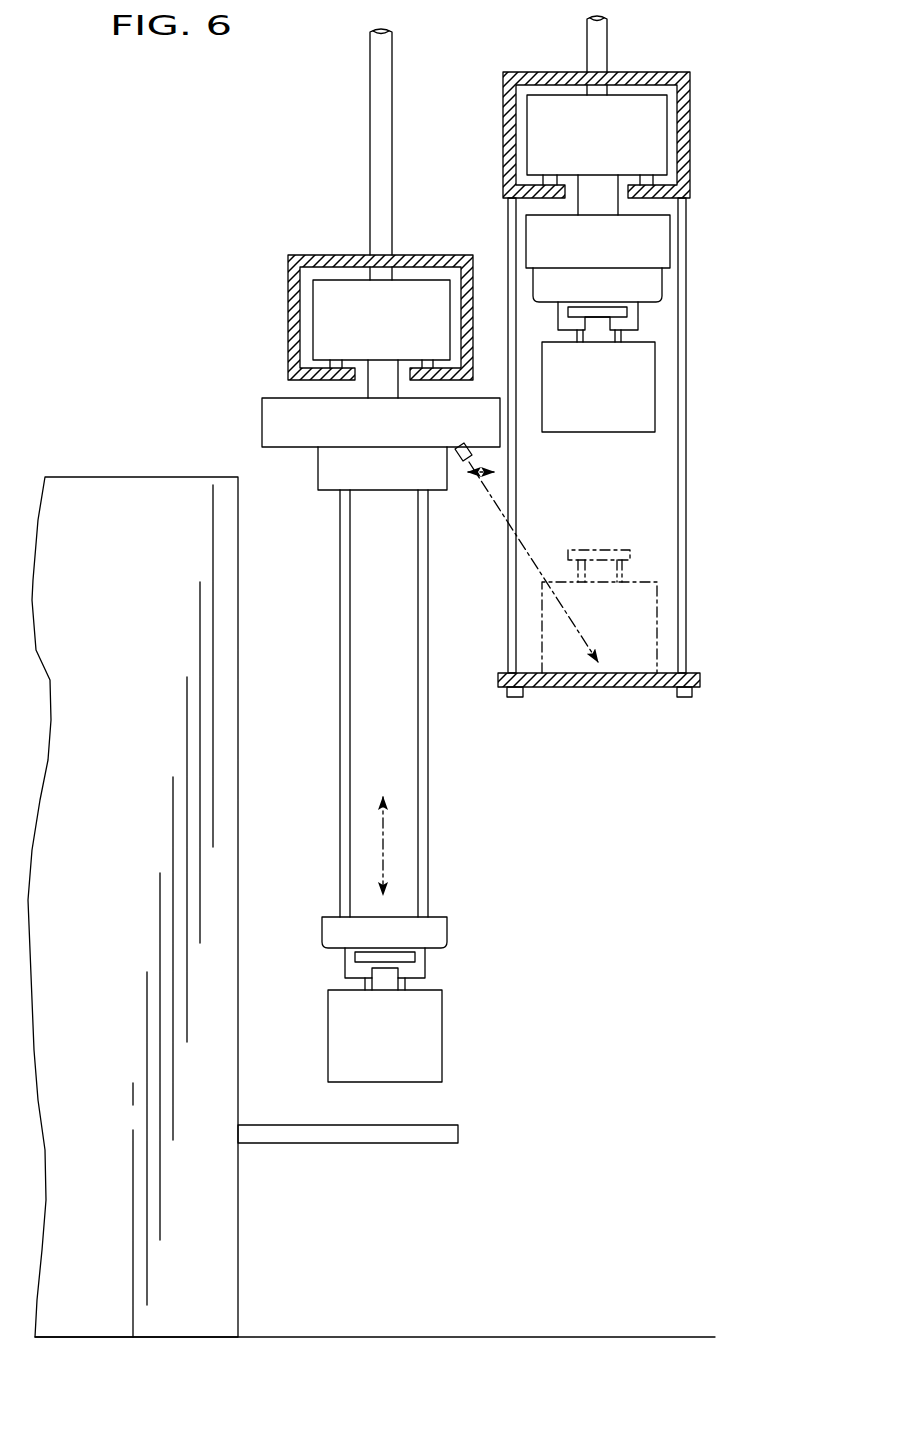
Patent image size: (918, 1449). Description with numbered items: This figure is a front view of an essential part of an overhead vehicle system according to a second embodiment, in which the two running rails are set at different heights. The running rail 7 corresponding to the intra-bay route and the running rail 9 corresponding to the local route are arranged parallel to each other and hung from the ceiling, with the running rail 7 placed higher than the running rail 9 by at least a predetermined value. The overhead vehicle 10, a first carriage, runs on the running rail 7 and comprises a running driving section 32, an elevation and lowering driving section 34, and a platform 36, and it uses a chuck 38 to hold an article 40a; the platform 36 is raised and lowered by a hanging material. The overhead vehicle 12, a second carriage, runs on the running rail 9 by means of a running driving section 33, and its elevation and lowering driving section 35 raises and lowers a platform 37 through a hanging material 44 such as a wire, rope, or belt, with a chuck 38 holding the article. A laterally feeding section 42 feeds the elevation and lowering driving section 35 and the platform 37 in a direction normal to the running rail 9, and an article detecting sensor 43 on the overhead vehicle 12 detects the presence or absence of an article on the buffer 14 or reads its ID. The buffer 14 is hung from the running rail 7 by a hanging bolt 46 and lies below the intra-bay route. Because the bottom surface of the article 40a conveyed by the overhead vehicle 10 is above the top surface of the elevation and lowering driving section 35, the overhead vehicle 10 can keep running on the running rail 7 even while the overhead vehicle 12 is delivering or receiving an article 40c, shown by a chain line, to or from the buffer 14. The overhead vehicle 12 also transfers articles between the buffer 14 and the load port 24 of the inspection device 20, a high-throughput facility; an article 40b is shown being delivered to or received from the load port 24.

The running rail 7 is at (690, 111).
The running rail 9 is at (289, 292).
The overhead vehicle 10 is at (620, 389).
The overhead vehicle 12 is at (272, 420).
The buffer 14 is at (633, 688).
The inspection device 20 is at (92, 477).
The load port 24 is at (428, 1144).
The running driving section 32 is at (645, 140).
The running driving section 33 is at (335, 323).
The elevation and lowering driving section 34 is at (655, 228).
The elevation and lowering driving section 35 is at (328, 478).
The platform 36 is at (650, 282).
The platform 37 is at (432, 930).
The chuck 38 is at (422, 968).
The article 40a is at (642, 372).
The article 40b is at (425, 1026).
The article 40c is at (645, 612).
The laterally feeding section 42 is at (295, 432).
The article detecting sensor 43 is at (457, 463).
The hanging material 44 is at (340, 745).
The hanging bolt 46 is at (686, 432).